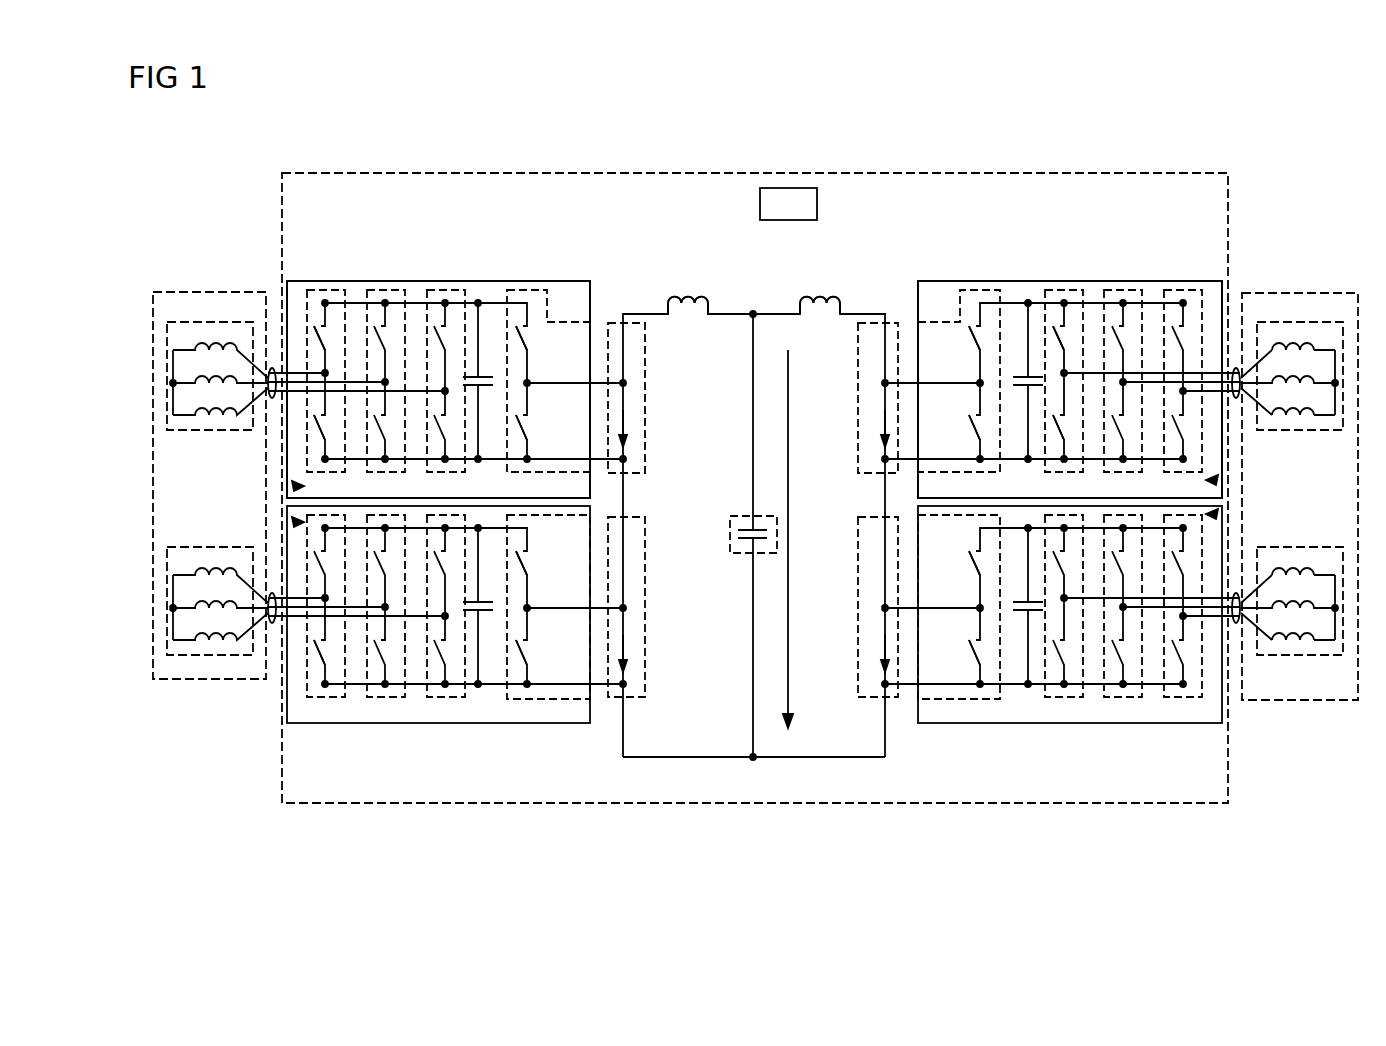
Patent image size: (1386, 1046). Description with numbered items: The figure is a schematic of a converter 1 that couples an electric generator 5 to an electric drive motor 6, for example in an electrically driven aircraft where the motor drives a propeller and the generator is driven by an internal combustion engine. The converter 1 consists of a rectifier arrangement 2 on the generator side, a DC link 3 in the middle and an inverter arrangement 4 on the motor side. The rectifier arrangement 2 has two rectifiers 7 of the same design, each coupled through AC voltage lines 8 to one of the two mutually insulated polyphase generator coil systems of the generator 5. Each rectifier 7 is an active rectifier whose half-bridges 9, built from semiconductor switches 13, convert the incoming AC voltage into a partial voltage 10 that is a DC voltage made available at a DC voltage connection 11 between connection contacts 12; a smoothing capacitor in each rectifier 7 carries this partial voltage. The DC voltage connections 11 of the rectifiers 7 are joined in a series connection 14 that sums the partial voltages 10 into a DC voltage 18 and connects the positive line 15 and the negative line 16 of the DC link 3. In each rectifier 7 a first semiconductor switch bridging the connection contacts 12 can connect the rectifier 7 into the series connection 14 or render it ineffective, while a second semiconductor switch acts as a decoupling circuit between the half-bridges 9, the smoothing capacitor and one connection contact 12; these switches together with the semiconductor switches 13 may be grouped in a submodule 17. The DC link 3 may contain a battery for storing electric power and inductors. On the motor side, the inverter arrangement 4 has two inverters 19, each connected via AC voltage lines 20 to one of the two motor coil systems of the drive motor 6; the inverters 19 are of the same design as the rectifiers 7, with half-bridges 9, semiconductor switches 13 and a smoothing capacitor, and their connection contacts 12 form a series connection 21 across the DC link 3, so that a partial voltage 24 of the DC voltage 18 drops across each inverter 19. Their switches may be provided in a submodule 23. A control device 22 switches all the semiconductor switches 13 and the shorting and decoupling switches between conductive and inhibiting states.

The converter 1 is at (665, 173).
The rectifier arrangement 2 is at (484, 250).
The DC link 3 is at (866, 240).
The inverter arrangement 4 is at (1001, 248).
The electric generator 5 is at (193, 292).
The electric drive motor 6 is at (1312, 293).
The rectifier 7 is at (508, 281).
The AC voltage line 8 is at (272, 365).
The half-bridge 9 is at (322, 290).
The partial voltage 10 is at (628, 413).
The DC voltage connection 11 is at (573, 322).
The connection contact 12 is at (628, 383).
The semiconductor switch 13 is at (328, 332).
The series connection 14 is at (640, 362).
The positive line 15 is at (752, 312).
The negative line 16 is at (711, 760).
The submodule 17 is at (296, 486).
The DC voltage 18 is at (790, 508).
The inverter 19 is at (970, 281).
The AC voltage line 20 is at (1237, 365).
The series connection 21 is at (870, 362).
The control device 22 is at (783, 188).
The submodule 23 is at (1214, 480).
The partial voltage 24 is at (880, 413).